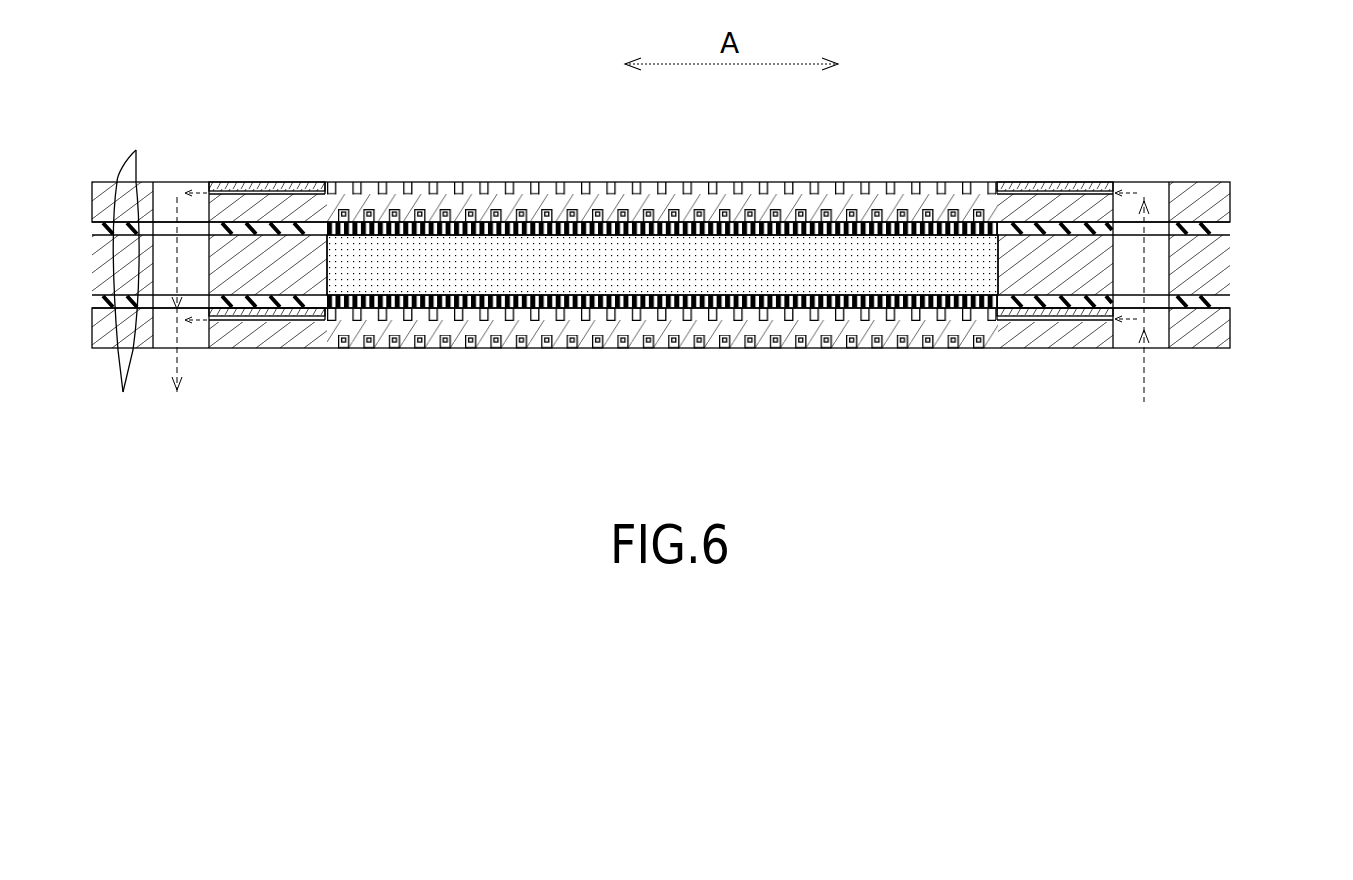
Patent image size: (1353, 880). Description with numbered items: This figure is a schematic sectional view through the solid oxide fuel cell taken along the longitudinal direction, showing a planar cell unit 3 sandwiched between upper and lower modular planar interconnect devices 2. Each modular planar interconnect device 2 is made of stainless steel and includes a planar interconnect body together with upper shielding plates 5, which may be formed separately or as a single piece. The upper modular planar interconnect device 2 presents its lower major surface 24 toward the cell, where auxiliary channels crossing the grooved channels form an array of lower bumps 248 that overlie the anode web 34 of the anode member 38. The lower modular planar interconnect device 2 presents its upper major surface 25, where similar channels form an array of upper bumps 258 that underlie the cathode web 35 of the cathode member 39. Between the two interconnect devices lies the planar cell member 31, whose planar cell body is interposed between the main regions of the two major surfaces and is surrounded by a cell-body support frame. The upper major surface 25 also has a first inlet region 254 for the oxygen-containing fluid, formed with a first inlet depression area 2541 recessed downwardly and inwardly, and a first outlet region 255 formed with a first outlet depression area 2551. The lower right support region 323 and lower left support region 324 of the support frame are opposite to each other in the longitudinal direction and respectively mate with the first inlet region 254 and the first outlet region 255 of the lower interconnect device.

The modular planar interconnect device 2 is at (1236, 195).
The planar cell unit 3 is at (1302, 210).
The upper shielding plate 5 is at (1100, 319).
The lower major surface 24 is at (125, 303).
The upper major surface 25 is at (132, 251).
The planar cell member 31 is at (1232, 268).
The anode web 34 is at (940, 219).
The cathode web 35 is at (931, 304).
The anode member 38 is at (1232, 230).
The cathode member 39 is at (1232, 303).
The lower bumps 248 is at (533, 206).
The first inlet region 254 is at (1071, 311).
The first outlet region 255 is at (310, 316).
The upper bumps 258 is at (548, 313).
The lower right support region 323 is at (1018, 268).
The lower left support region 324 is at (228, 282).
The first inlet depression area 2541 is at (1042, 319).
The first outlet depression area 2551 is at (282, 321).